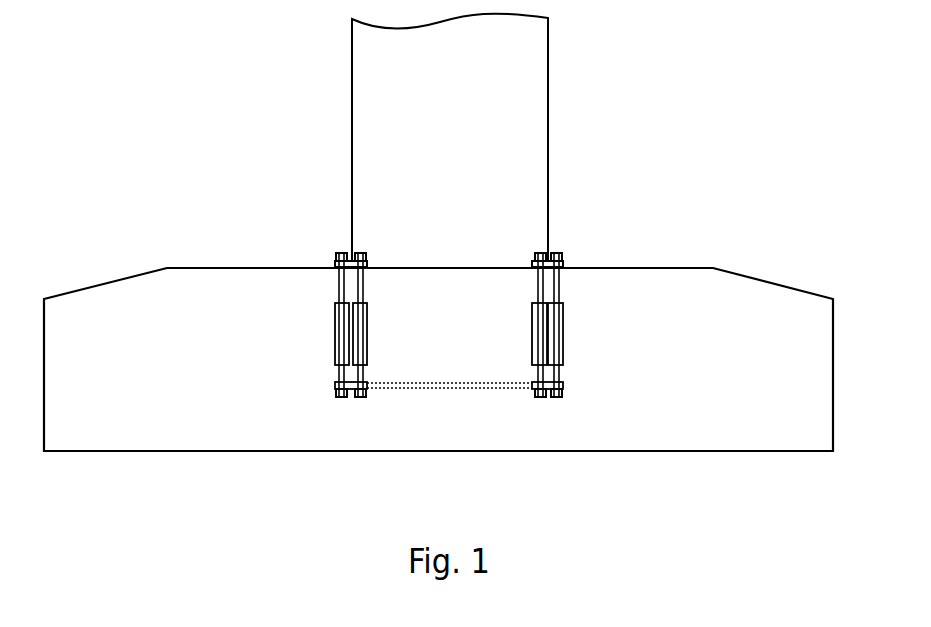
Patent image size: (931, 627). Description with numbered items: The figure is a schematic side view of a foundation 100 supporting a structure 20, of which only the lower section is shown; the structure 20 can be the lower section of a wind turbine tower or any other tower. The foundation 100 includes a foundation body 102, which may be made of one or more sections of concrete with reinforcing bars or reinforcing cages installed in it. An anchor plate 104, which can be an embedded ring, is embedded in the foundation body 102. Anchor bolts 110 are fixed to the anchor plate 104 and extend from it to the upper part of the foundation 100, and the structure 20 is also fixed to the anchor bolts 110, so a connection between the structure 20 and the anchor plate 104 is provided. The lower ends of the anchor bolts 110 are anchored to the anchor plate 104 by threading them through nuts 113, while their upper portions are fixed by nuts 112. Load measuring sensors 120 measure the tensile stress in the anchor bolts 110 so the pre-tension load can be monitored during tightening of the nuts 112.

The foundation 100 is at (182, 211).
The structure 20 is at (532, 127).
The foundation body 102 is at (723, 280).
The anchor plate 104 is at (563, 386).
The anchor bolts 110 is at (365, 295).
The nuts 112 is at (366, 260).
The nuts 113 is at (335, 388).
The load measuring sensors 120 is at (337, 315).